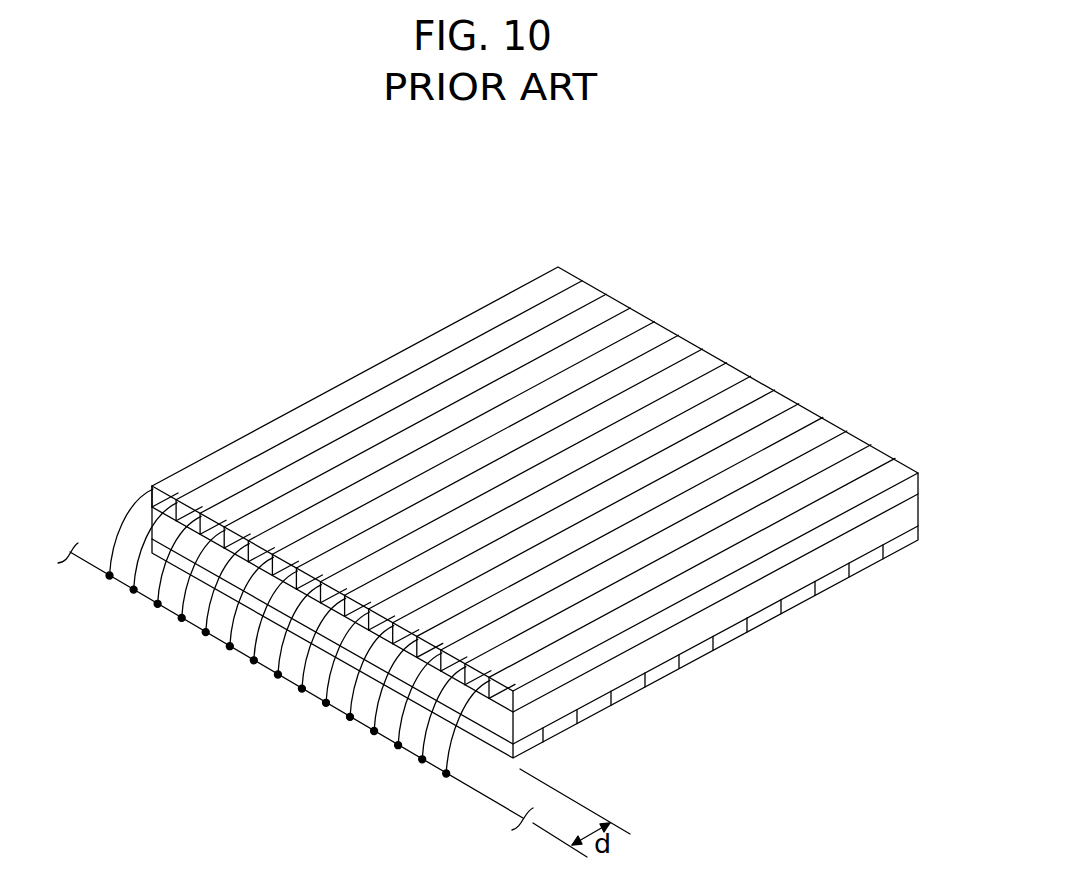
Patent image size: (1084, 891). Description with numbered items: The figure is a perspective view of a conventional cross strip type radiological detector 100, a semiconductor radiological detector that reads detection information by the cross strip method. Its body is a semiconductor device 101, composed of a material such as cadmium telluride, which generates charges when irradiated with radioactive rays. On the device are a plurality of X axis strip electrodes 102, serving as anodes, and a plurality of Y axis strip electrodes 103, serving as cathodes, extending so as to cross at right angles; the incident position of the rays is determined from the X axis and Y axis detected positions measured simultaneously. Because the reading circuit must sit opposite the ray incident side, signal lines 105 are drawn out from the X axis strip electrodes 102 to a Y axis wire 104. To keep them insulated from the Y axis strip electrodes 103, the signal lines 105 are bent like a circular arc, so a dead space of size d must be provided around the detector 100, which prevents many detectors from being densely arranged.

The cross strip type radiological detector 100 is at (597, 283).
The semiconductor device 101 is at (683, 637).
The X axis strip electrodes 102 is at (830, 580).
The Y axis strip electrodes 103 is at (752, 393).
The Y axis wire 104 is at (393, 750).
The signal lines 105 is at (475, 792).